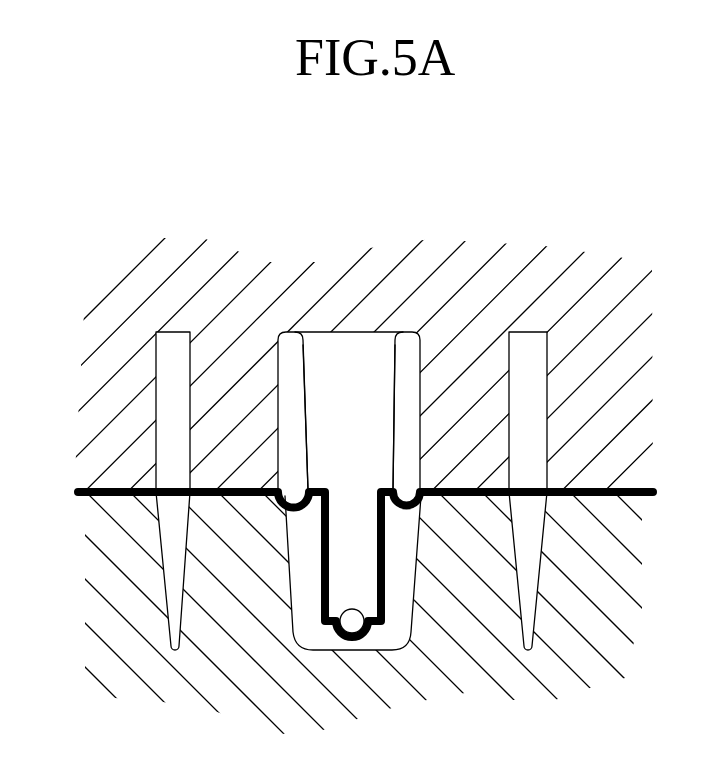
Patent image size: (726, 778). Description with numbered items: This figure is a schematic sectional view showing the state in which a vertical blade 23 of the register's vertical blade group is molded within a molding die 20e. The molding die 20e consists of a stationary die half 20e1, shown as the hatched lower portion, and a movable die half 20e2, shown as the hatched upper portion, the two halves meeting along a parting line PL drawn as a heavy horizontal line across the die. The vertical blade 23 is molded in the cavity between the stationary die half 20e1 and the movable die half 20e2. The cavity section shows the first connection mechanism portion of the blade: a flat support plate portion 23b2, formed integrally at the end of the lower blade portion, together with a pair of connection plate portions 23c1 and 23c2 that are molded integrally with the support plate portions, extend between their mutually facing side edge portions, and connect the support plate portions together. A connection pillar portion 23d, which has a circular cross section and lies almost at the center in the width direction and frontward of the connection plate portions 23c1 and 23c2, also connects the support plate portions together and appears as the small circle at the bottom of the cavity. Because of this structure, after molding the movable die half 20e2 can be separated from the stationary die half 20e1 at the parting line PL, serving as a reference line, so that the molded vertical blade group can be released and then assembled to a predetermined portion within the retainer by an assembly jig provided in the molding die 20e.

The molding die 20e is at (363, 460).
The movable die half 20e2 is at (350, 260).
The stationary die half 20e1 is at (512, 729).
The vertical blade 23 is at (356, 470).
The support plate portion 23b2 is at (388, 332).
The connection plate portion 23c1 is at (299, 397).
The connection plate portion 23c2 is at (403, 450).
The connection pillar portion 23d is at (352, 624).
The parting line PL is at (612, 487).